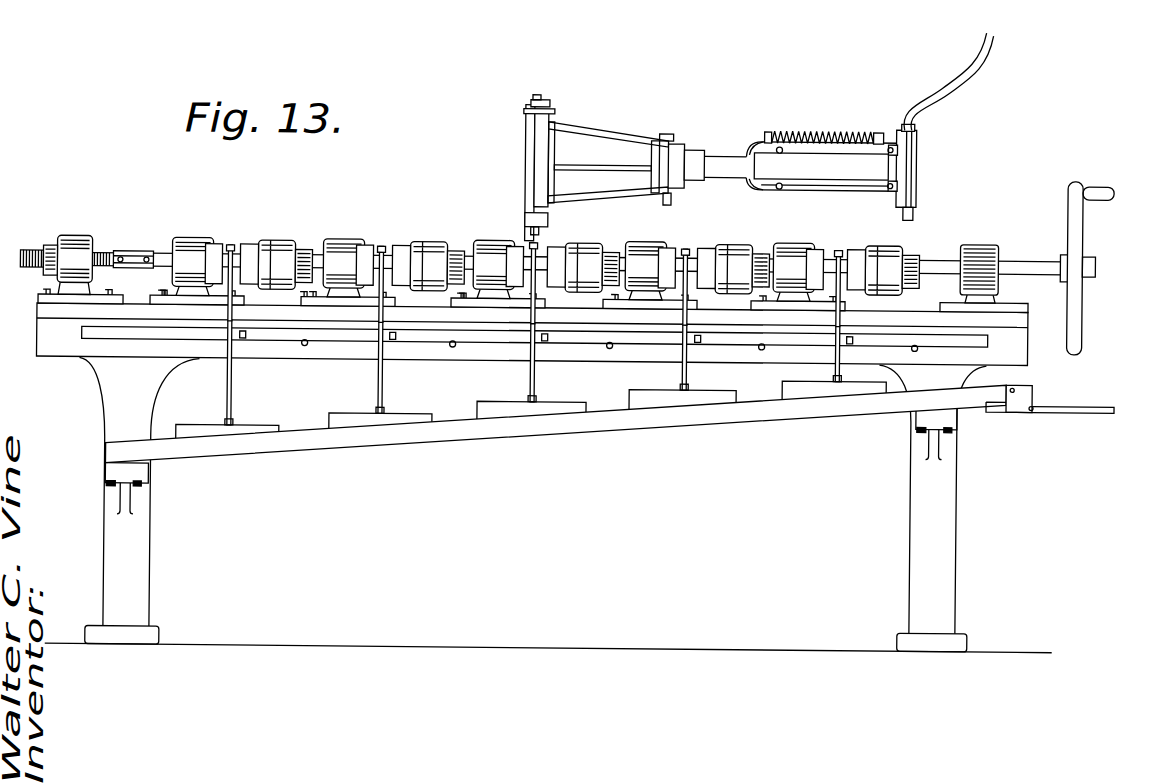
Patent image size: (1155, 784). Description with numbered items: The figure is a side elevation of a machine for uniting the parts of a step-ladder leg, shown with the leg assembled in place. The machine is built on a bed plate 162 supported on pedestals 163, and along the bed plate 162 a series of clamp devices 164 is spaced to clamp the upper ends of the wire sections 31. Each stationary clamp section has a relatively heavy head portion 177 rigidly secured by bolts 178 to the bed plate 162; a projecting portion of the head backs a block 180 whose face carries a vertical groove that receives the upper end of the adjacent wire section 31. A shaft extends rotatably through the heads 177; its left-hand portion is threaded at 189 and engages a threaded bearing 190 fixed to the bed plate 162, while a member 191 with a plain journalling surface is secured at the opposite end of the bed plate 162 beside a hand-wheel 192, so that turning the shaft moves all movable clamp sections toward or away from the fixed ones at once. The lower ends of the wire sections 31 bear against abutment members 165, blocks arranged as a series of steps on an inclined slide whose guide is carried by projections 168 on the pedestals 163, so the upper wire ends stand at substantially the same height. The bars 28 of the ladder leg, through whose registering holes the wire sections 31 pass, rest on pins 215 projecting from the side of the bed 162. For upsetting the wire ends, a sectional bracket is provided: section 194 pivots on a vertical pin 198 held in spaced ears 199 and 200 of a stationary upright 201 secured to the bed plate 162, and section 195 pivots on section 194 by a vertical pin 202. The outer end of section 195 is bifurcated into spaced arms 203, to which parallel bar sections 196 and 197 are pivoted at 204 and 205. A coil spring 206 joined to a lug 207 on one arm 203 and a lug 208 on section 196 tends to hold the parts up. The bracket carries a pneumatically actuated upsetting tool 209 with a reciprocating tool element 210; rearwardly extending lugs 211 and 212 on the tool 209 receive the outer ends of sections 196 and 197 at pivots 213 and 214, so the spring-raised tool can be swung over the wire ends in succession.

The bars 28 is at (220, 340).
The wire sections 31 is at (233, 391).
The bed plate 162 is at (904, 315).
The pedestals 163 is at (154, 547).
The clamp devices 164 is at (249, 235).
The abutment members 165 is at (268, 426).
The projections 168 is at (143, 469).
The head portion 177 is at (190, 236).
The bolts 178 is at (163, 292).
The block 180 is at (231, 244).
The threaded portion 189 is at (33, 250).
The threaded bearing 190 is at (77, 246).
The journalling member 191 is at (984, 246).
The hand-wheel 192 is at (1078, 215).
The bracket section 194 is at (620, 124).
The bracket section 195 is at (704, 160).
The bracket section 196 is at (822, 166).
The bracket section 197 is at (837, 179).
The pivot pin 198 is at (551, 107).
The ear 199 is at (537, 92).
The ear 200 is at (526, 219).
The stationary upright 201 is at (523, 136).
The pivoting pin 202 is at (667, 127).
The arms 203 is at (757, 133).
The pivot 204 is at (821, 166).
The pivot 205 is at (778, 182).
The coil spring 206 is at (804, 125).
The lug 207 is at (766, 125).
The lug 208 is at (880, 125).
The upsetting tool 209 is at (916, 185).
The reciprocating tool element 210 is at (912, 207).
The lug 211 is at (913, 138).
The lug 212 is at (901, 178).
The pivot 213 is at (911, 116).
The pivot 214 is at (898, 163).
The pins 215 is at (307, 343).